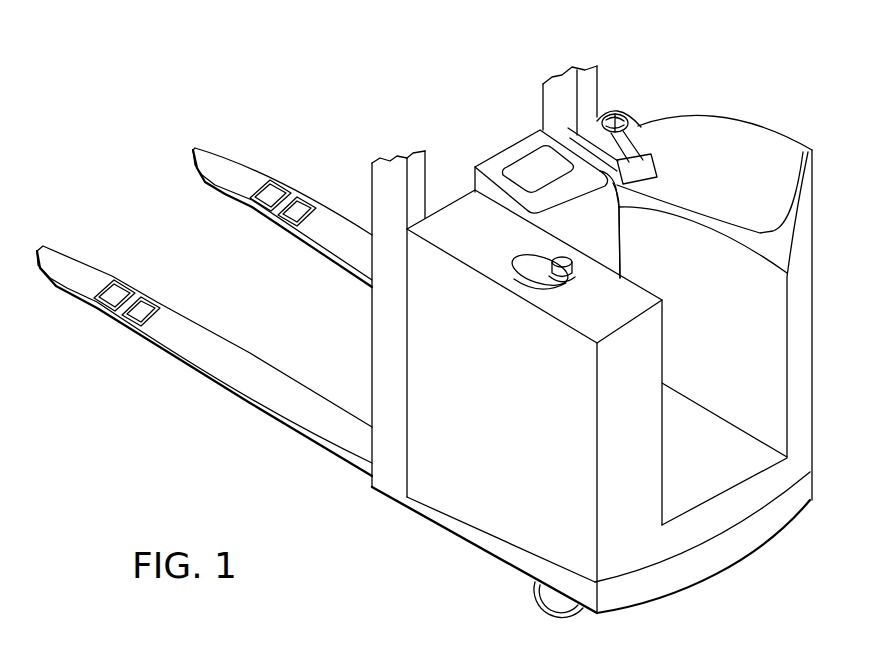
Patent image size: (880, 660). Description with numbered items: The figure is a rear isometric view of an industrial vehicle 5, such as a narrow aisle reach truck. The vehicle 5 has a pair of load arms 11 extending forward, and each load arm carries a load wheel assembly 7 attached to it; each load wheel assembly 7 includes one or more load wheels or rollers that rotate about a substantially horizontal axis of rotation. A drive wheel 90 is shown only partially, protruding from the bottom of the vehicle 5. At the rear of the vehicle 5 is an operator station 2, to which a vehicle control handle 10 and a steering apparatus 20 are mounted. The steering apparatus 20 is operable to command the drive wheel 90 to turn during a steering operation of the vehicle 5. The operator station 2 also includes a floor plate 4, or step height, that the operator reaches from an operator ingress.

The operator station 2 is at (707, 243).
The floor plate 4 is at (705, 482).
The industrial vehicle 5 is at (805, 111).
The load wheel assembly 7 is at (144, 281).
The vehicle control handle 10 is at (657, 153).
The load arms 11 is at (245, 161).
The steering apparatus 20 is at (514, 259).
The drive wheel 90 is at (546, 611).